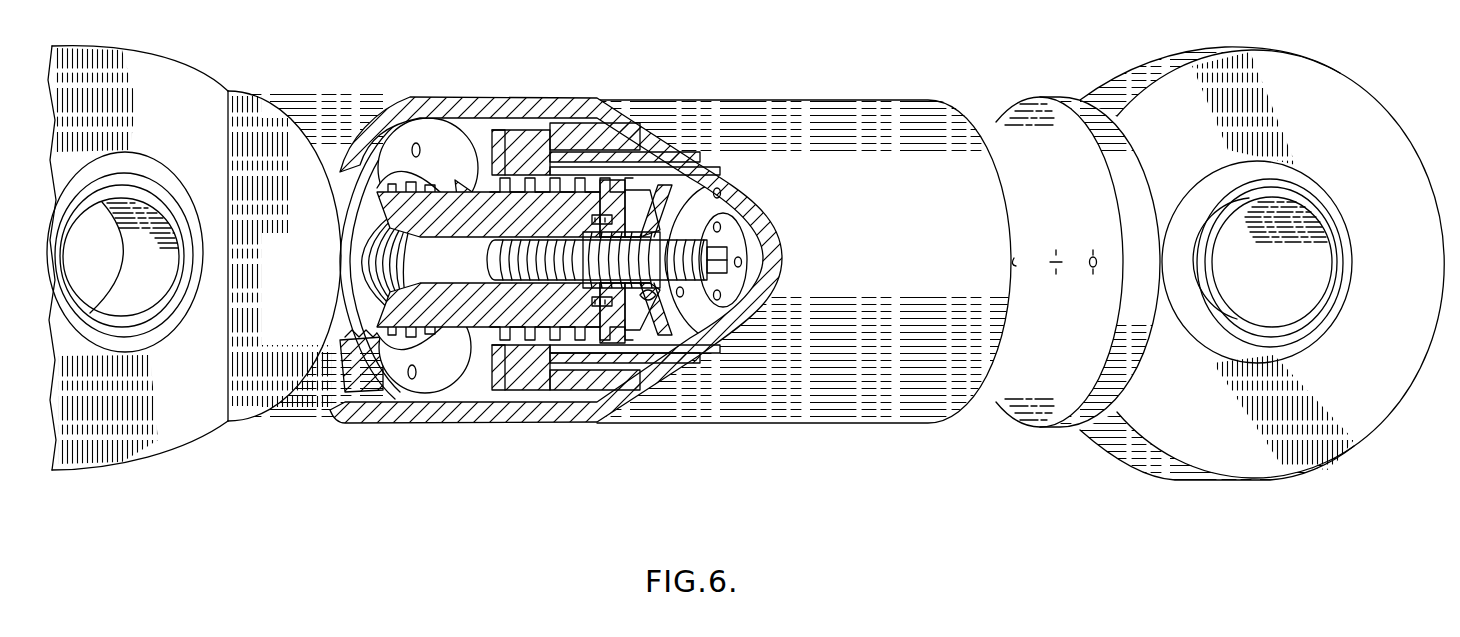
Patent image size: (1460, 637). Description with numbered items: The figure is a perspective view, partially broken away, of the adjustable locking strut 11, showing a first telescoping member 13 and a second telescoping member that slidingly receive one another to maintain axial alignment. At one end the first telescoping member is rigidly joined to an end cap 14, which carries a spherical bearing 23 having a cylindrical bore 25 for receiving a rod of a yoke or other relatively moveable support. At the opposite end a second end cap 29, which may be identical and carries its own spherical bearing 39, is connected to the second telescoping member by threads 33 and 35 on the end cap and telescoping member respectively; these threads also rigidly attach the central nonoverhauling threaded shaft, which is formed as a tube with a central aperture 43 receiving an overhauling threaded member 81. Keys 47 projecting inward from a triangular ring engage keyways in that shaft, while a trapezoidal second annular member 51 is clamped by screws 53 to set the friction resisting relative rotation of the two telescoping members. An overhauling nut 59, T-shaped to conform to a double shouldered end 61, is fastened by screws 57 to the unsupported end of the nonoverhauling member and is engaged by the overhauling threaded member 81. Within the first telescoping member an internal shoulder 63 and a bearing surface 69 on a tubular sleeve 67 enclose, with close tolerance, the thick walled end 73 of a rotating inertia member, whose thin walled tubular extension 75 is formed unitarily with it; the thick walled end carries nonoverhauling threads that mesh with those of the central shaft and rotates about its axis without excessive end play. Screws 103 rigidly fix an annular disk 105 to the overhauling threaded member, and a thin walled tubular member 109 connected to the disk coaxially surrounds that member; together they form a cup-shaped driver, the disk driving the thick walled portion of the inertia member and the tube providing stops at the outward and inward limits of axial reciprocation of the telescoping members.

The adjustable locking strut 11 is at (614, 432).
The first telescoping member 13 is at (972, 398).
The end cap 14 is at (1185, 52).
The spherical bearing 23 is at (1312, 198).
The cylindrical bore 25 is at (1296, 320).
The second end cap 29 is at (220, 428).
The threads 33 is at (381, 350).
The threads 35 is at (362, 380).
The spherical bearing 39 is at (127, 173).
The central aperture 43 is at (470, 200).
The keys 47 is at (407, 378).
The second annular member 51 is at (427, 138).
The screws 53 is at (416, 143).
The screws 57 is at (560, 343).
The overhauling nut 59 is at (672, 290).
The double shouldered end 61 is at (600, 298).
The internal shoulder 63 is at (512, 372).
The tubular sleeve 67 is at (577, 140).
The bearing surface 69 is at (527, 140).
The thick walled end 73 is at (510, 138).
The thin walled tubular extension 75 is at (627, 153).
The overhauling threaded member 81 is at (672, 235).
The screws 103 is at (719, 222).
The annular disk 105 is at (713, 188).
The thin walled tubular member 109 is at (656, 302).